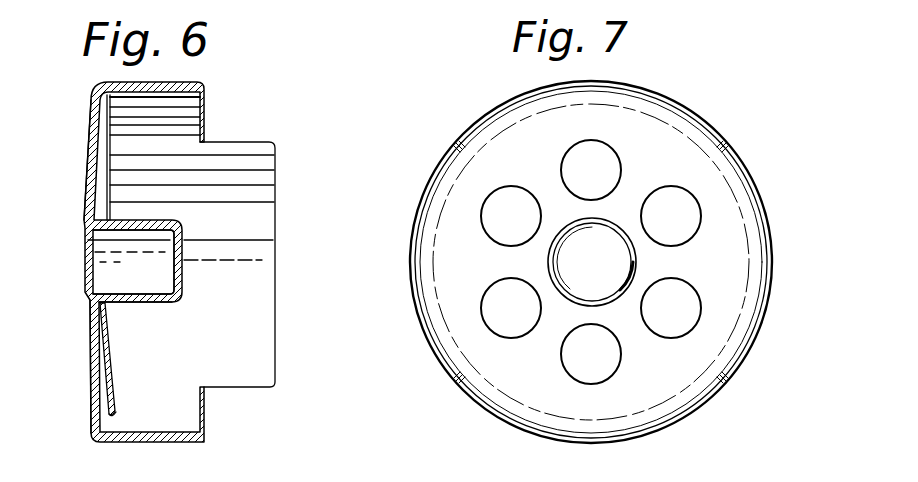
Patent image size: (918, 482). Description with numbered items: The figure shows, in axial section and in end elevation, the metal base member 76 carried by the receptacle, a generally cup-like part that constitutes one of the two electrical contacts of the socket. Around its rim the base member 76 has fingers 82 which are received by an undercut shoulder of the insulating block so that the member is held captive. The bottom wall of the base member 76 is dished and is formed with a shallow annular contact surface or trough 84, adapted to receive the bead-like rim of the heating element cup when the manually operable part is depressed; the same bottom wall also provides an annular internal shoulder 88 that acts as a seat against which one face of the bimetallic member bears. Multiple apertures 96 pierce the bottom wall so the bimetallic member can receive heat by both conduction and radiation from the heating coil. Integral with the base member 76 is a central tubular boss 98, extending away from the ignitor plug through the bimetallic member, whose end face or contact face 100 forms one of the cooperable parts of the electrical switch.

In FIG. 6, the base member 76 is at (234, 392).
In FIG. 7, the base member 76 is at (436, 359).
In FIG. 6, the fingers 82 is at (267, 333).
In FIG. 7, the fingers 82 is at (425, 203).
In FIG. 6, the annular contact surface or trough 84 is at (100, 408).
In FIG. 6, the internal shoulder 88 is at (113, 409).
In FIG. 6, the apertures 96 is at (89, 181).
In FIG. 7, the apertures 96 is at (662, 203).
In FIG. 6, the tubular boss 98 is at (148, 296).
In FIG. 6, the end face or contact face 100 is at (180, 274).
In FIG. 7, the end face or contact face 100 is at (607, 265).